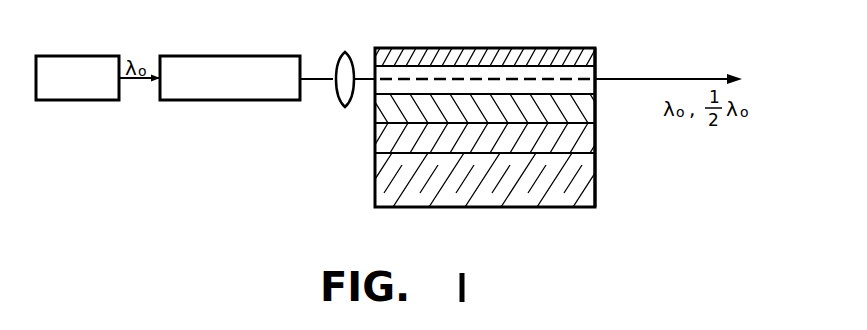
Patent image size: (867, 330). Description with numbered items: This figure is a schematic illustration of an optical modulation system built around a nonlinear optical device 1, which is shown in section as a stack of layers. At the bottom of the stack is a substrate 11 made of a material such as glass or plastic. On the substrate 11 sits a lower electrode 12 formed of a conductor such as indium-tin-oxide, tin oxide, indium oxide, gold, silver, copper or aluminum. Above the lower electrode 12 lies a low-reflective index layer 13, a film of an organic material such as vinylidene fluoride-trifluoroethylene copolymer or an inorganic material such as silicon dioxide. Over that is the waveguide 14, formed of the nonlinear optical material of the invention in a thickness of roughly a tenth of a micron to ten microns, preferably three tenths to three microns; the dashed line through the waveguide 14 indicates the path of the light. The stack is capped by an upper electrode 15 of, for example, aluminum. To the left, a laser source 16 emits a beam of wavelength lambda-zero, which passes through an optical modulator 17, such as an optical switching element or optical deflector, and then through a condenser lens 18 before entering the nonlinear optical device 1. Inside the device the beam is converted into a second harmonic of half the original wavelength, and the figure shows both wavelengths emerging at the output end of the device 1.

The nonlinear optical device 1 is at (605, 180).
The substrate 11 is at (375, 190).
The lower electrode 12 is at (375, 137).
The low-reflective index layer 13 is at (597, 113).
The waveguide 14 is at (597, 65).
The upper electrode 15 is at (570, 48).
The laser source 16 is at (88, 56).
The optical modulator 17 is at (243, 56).
The condenser lens 18 is at (344, 52).